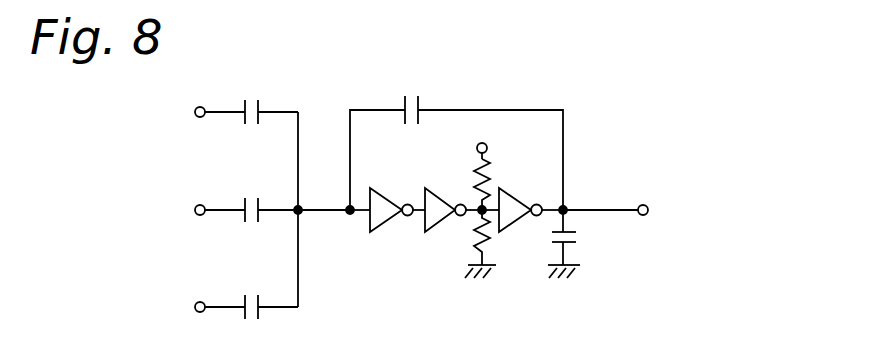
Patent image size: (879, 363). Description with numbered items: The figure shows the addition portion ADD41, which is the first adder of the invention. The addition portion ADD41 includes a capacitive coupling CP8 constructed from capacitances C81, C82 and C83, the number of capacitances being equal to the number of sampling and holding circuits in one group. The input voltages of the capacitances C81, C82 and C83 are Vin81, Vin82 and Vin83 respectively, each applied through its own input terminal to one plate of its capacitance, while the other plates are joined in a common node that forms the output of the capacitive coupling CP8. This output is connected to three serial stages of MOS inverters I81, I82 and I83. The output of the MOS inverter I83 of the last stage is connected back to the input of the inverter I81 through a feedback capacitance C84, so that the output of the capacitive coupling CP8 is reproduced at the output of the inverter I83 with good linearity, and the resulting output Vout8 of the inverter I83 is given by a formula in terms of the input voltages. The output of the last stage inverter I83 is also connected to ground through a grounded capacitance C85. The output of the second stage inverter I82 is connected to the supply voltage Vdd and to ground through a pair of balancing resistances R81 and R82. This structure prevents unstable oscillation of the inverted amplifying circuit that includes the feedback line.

The input voltage Vin81 is at (186, 111).
The input voltage Vin82 is at (187, 210).
The input voltage Vin83 is at (187, 306).
The capacitance C81 is at (265, 99).
The capacitance C82 is at (265, 196).
The capacitance C83 is at (265, 293).
The feedback capacitance C84 is at (454, 142).
The grounded capacitance C85 is at (585, 244).
The balancing resistance R81 is at (469, 160).
The balancing resistance R82 is at (470, 242).
The MOS inverter I81 is at (387, 199).
The MOS inverter I82 is at (453, 199).
The MOS inverter I83 is at (522, 199).
The supply voltage Vdd is at (503, 147).
The output Vout8 is at (634, 209).
The capacitive coupling CP8 is at (334, 284).
The addition portion ADD41 is at (617, 133).